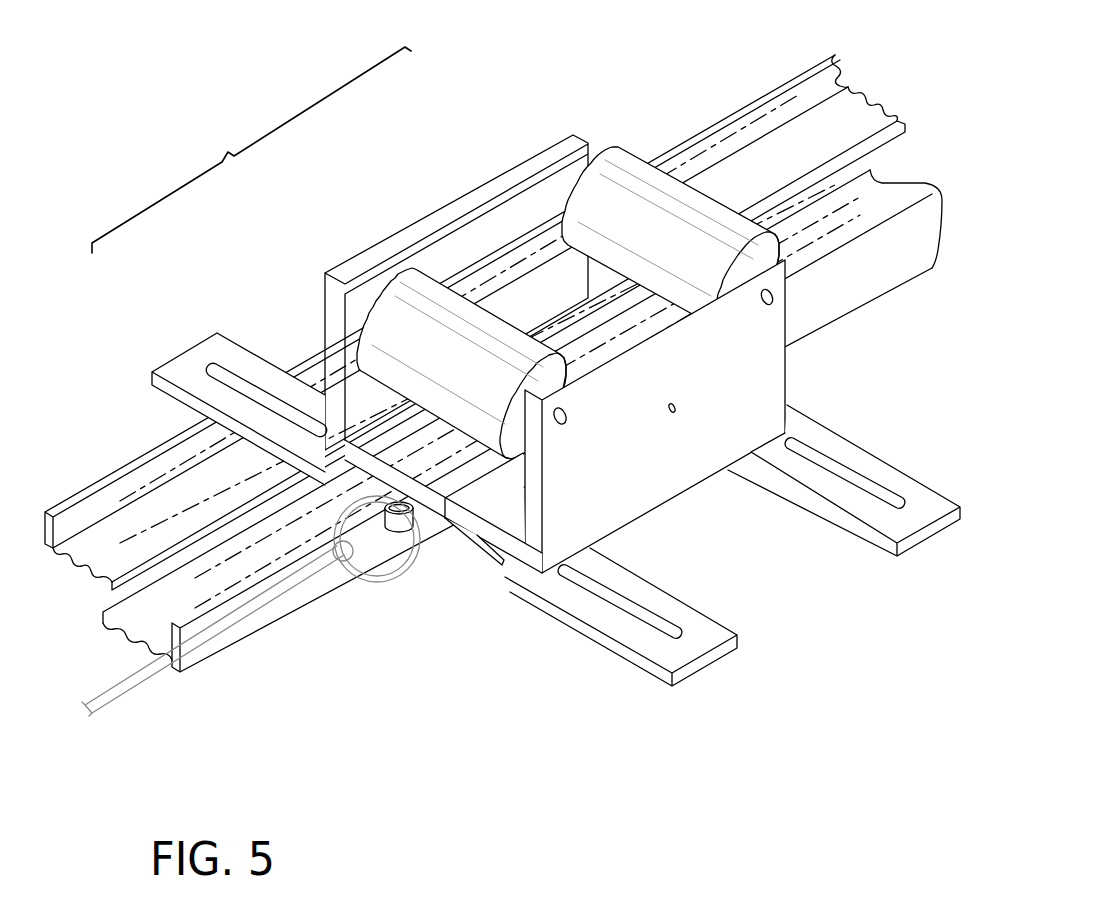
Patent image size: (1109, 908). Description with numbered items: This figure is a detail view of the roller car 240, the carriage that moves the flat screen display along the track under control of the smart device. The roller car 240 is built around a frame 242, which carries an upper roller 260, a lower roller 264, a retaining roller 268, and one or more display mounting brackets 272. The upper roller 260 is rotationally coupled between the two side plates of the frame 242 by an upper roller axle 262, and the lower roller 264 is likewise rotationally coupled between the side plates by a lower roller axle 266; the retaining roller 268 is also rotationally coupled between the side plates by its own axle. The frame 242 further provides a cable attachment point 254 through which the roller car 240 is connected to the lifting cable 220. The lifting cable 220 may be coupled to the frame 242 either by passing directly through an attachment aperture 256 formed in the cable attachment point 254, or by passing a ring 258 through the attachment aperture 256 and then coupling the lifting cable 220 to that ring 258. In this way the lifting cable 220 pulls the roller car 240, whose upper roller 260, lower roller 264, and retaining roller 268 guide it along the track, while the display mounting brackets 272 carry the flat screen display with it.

The lifting cable 220 is at (150, 675).
The roller car 240 is at (251, 150).
The frame 242 is at (690, 473).
The cable attachment point 254 is at (427, 520).
The attachment aperture 256 is at (398, 518).
The ring 258 is at (357, 572).
The upper roller 260 is at (397, 303).
The upper roller axle 262 is at (560, 420).
The lower roller 264 is at (613, 195).
The lower roller axle 266 is at (773, 296).
The retaining roller 268 is at (540, 323).
The display mounting bracket 272 is at (920, 537).